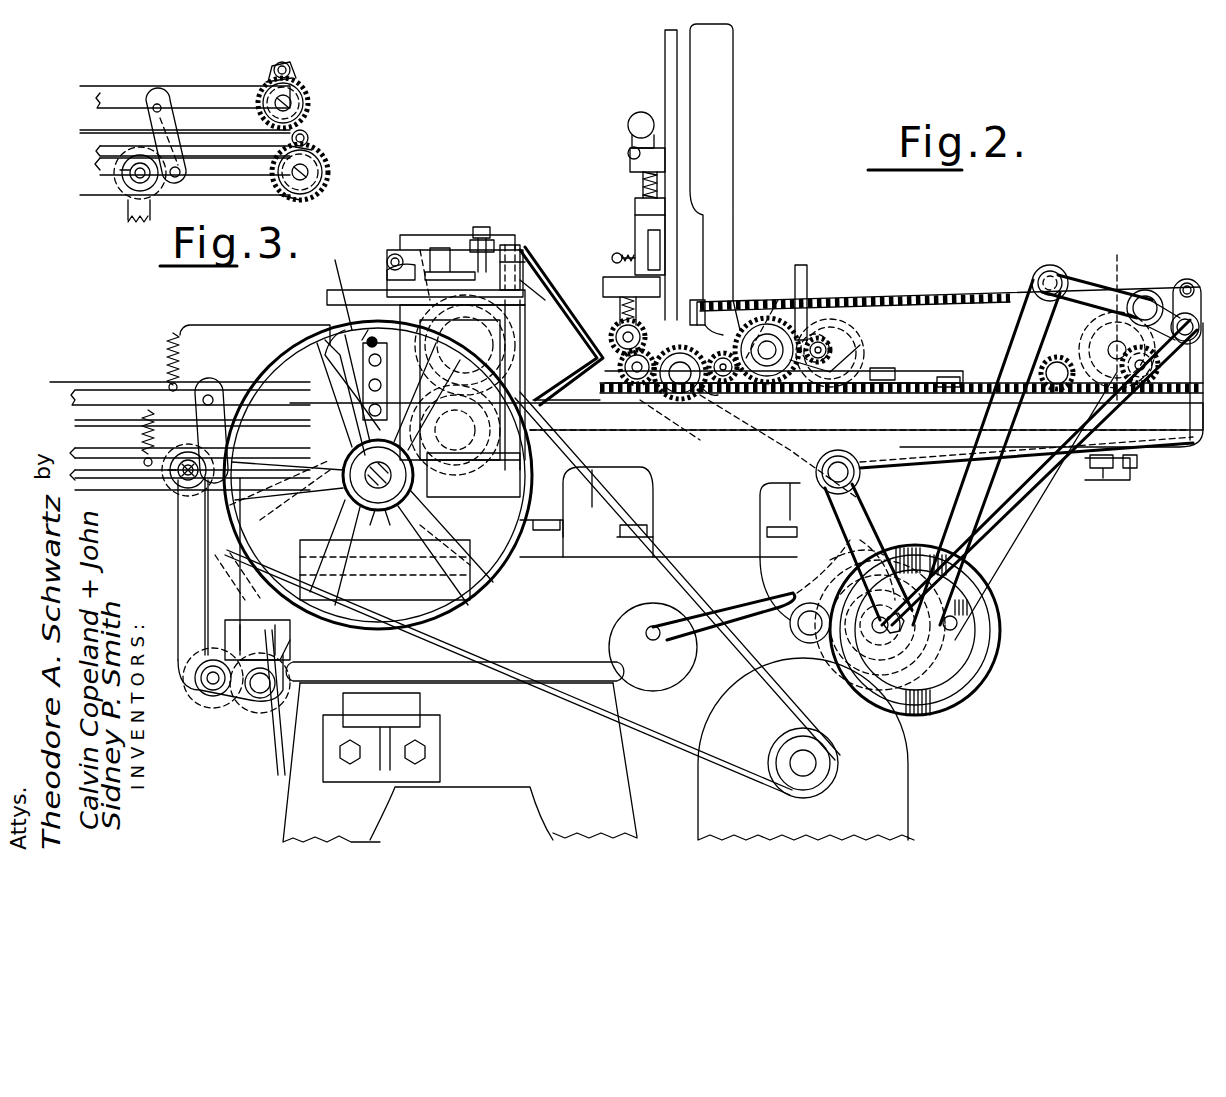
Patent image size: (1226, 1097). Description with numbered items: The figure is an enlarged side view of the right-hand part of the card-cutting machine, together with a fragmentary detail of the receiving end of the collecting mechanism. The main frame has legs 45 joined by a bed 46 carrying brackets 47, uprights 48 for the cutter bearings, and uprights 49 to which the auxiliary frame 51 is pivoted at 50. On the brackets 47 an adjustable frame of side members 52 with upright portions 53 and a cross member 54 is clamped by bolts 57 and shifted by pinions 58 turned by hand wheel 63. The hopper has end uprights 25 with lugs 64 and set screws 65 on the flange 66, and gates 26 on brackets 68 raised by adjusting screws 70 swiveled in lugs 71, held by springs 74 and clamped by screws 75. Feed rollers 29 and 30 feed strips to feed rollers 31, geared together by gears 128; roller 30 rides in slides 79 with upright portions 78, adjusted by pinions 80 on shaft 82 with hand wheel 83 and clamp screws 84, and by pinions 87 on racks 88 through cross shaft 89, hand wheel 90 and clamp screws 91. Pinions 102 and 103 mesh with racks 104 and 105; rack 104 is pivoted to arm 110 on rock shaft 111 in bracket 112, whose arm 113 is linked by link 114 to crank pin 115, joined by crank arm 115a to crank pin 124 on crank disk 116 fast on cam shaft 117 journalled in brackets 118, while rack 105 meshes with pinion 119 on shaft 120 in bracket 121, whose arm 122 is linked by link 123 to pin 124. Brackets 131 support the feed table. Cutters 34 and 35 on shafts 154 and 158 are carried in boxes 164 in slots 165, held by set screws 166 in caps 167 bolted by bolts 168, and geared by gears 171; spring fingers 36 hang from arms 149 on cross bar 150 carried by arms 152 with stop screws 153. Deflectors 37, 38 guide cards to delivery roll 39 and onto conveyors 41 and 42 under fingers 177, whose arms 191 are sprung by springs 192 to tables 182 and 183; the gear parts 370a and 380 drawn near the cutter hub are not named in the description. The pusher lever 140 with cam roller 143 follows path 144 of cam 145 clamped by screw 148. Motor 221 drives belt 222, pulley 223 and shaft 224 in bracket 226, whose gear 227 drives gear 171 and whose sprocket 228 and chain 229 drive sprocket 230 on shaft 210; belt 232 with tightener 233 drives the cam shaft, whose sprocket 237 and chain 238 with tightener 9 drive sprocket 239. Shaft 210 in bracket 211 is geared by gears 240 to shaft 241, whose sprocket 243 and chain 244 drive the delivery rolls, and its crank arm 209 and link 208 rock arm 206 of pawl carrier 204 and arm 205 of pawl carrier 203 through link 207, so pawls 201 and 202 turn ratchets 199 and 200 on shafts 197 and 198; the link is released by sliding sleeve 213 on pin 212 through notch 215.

In FIG. 2, the chain tightener 9 is at (852, 470).
In FIG. 2, the end uprights 25 is at (730, 110).
In FIG. 2, the gates 26 is at (665, 100).
In FIG. 2, the feed roller 29 is at (700, 300).
In FIG. 2, the feed roller 30 is at (762, 368).
In FIG. 2, the feed rollers 31 is at (612, 337).
In FIG. 2, the rotary cutters 34 is at (420, 255).
In FIG. 2, the rotary cutters 35 is at (528, 465).
In FIG. 2, the spring fingers 36 is at (512, 380).
In FIG. 2, the inner deflectors 37 is at (455, 395).
In FIG. 2, the outer deflectors 38 is at (450, 340).
In FIG. 2, the delivery roll 39 is at (370, 338).
In FIG. 3, the conveyor 41 is at (215, 128).
In FIG. 2, the conveyor 41 is at (220, 382).
In FIG. 3, the conveyor 42 is at (92, 150).
In FIG. 2, the conveyor 42 is at (132, 470).
In FIG. 2, the legs 45 is at (610, 820).
In FIG. 2, the bed or cap member 46 is at (575, 632).
In FIG. 2, the brackets 47 is at (1040, 470).
In FIG. 2, the uprights 48 is at (510, 332).
In FIG. 2, the uprights 49 is at (330, 515).
In FIG. 2, the pivot 50 is at (300, 500).
In FIG. 2, the auxiliary frame 51 is at (355, 330).
In FIG. 2, the side members 52 is at (948, 377).
In FIG. 2, the upright portions 53 is at (620, 305).
In FIG. 2, the cross member 54 is at (612, 285).
In FIG. 2, the bolts 57 is at (1010, 378).
In FIG. 2, the pinions 58 is at (1125, 360).
In FIG. 2, the hand wheel 63 is at (1045, 365).
In FIG. 2, the bifurcated lugs 64 is at (638, 222).
In FIG. 2, the set screws 65 is at (617, 253).
In FIG. 2, the flange 66 is at (660, 245).
In FIG. 2, the bifurcated brackets 68 is at (638, 203).
In FIG. 2, the adjusting screws 70 is at (628, 120).
In FIG. 2, the lugs 71 is at (662, 158).
In FIG. 2, the springs 74 is at (643, 180).
In FIG. 2, the clamping screws 75 is at (628, 152).
In FIG. 2, the upright portions 78 is at (805, 270).
In FIG. 2, the slides 79 is at (930, 372).
In FIG. 2, the pinions 80 is at (840, 330).
In FIG. 2, the transverse shaft 82 is at (825, 345).
In FIG. 2, the hand wheel 83 is at (835, 350).
In FIG. 2, the clamp screws 84 is at (825, 320).
In FIG. 2, the pinions 87 is at (767, 318).
In FIG. 2, the racks 88 is at (722, 382).
In FIG. 2, the cross shaft 89 is at (706, 392).
In FIG. 2, the hand wheel 90 is at (722, 340).
In FIG. 2, the clamp screws 91 is at (900, 370).
In FIG. 2, the pinion 102 is at (778, 300).
In FIG. 2, the pinion 103 is at (690, 440).
In FIG. 2, the rack 104 is at (970, 300).
In FIG. 2, the rack 105 is at (900, 398).
In FIG. 2, the arm 110 is at (1188, 282).
In FIG. 2, the rock shaft 111 is at (1200, 325).
In FIG. 2, the bracket 112 is at (1195, 430).
In FIG. 2, the arm 113 is at (1148, 290).
In FIG. 2, the link 114 is at (998, 515).
In FIG. 2, the crank pin 115 is at (910, 620).
In FIG. 2, the crank arm 115a is at (948, 622).
In FIG. 2, the crank disk 116 is at (958, 670).
In FIG. 2, the cam shaft 117 is at (905, 705).
In FIG. 2, the brackets 118 is at (1008, 528).
In FIG. 2, the pinion 119 is at (1132, 468).
In FIG. 2, the shaft 120 is at (1112, 280).
In FIG. 2, the bracket 121 is at (1103, 468).
In FIG. 2, the arm 122 is at (1055, 272).
In FIG. 2, the link 123 is at (990, 412).
In FIG. 2, the crank pin 124 is at (940, 655).
In FIG. 2, the gears 128 is at (598, 366).
In FIG. 2, the brackets 131 is at (592, 495).
In FIG. 2, the lever 140 is at (778, 590).
In FIG. 2, the cam roller 143 is at (790, 623).
In FIG. 2, the cam path 144 is at (950, 712).
In FIG. 2, the cam 145 is at (980, 692).
In FIG. 2, the screw 148 is at (957, 626).
In FIG. 2, the arms 149 is at (520, 275).
In FIG. 2, the cross bar 150 is at (525, 262).
In FIG. 2, the arms 152 is at (440, 250).
In FIG. 2, the stop screws 153 is at (500, 224).
In FIG. 2, the upper cutter shaft 154 is at (440, 300).
In FIG. 2, the lower cutter shaft 158 is at (450, 528).
In FIG. 2, the boxes 164 is at (520, 302).
In FIG. 2, the vertical slots 165 is at (395, 310).
In FIG. 2, the set screws 166 is at (462, 235).
In FIG. 2, the caps 167 is at (385, 280).
In FIG. 2, the bolts 168 is at (390, 260).
In FIG. 2, the gears 171 is at (510, 350).
In FIG. 2, the yielding fingers 177 is at (300, 345).
In FIG. 3, the table 182 is at (100, 168).
In FIG. 2, the table 182 is at (132, 490).
In FIG. 3, the table 183 is at (125, 100).
In FIG. 2, the table 183 is at (110, 390).
In FIG. 2, the arms 191 is at (256, 330).
In FIG. 2, the springs 192 is at (170, 365).
In FIG. 3, the shaft 197 is at (292, 103).
In FIG. 3, the shaft 198 is at (322, 180).
In FIG. 3, the ratchet 199 is at (300, 92).
In FIG. 3, the ratchet 200 is at (308, 200).
In FIG. 3, the pawl 201 is at (276, 64).
In FIG. 3, the pawl 202 is at (308, 136).
In FIG. 3, the bracket 203 is at (296, 82).
In FIG. 3, the pawl carrier 204 is at (312, 150).
In FIG. 3, the arm 205 is at (180, 100).
In FIG. 2, the arm 205 is at (225, 400).
In FIG. 3, the arm 206 is at (240, 180).
In FIG. 3, the link 207 is at (182, 148).
In FIG. 2, the link 207 is at (205, 432).
In FIG. 3, the link 208 is at (132, 210).
In FIG. 2, the link 208 is at (178, 596).
In FIG. 2, the crank arm 209 is at (205, 695).
In FIG. 2, the shaft 210 is at (213, 700).
In FIG. 2, the bracket 211 is at (275, 800).
In FIG. 3, the pin 212 is at (150, 182).
In FIG. 2, the pin 212 is at (175, 485).
In FIG. 3, the telescoping sleeve 213 is at (128, 180).
In FIG. 2, the telescoping sleeve 213 is at (175, 478).
In FIG. 3, the notch 215 is at (150, 165).
In FIG. 2, the notch 215 is at (240, 560).
In FIG. 2, the electric motor 221 is at (880, 780).
In FIG. 2, the belt 222 is at (698, 760).
In FIG. 2, the pulley 223 is at (455, 598).
In FIG. 2, the shaft 224 is at (380, 545).
In FIG. 2, the bracket 226 is at (420, 733).
In FIG. 2, the gear 227 is at (372, 565).
In FIG. 2, the sprocket 228 is at (340, 530).
In FIG. 2, the chain 229 is at (208, 623).
In FIG. 2, the sprocket 230 is at (198, 690).
In FIG. 2, the belt 232 is at (700, 668).
In FIG. 2, the belt tightener 233 is at (650, 660).
In FIG. 2, the sprocket 237 is at (893, 560).
In FIG. 2, the chain 238 is at (868, 498).
In FIG. 2, the sprocket 239 is at (635, 385).
In FIG. 2, the gears 240 is at (258, 700).
In FIG. 2, the shaft 241 is at (256, 655).
In FIG. 2, the sprocket 243 is at (272, 750).
In FIG. 2, the chain 244 is at (245, 590).
In FIG. 2, the gear 370a is at (428, 420).
In FIG. 2, the shaft 380 is at (398, 460).